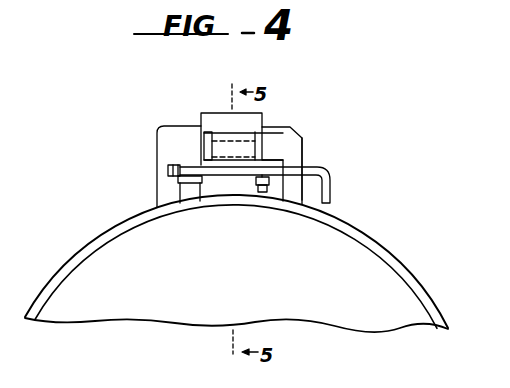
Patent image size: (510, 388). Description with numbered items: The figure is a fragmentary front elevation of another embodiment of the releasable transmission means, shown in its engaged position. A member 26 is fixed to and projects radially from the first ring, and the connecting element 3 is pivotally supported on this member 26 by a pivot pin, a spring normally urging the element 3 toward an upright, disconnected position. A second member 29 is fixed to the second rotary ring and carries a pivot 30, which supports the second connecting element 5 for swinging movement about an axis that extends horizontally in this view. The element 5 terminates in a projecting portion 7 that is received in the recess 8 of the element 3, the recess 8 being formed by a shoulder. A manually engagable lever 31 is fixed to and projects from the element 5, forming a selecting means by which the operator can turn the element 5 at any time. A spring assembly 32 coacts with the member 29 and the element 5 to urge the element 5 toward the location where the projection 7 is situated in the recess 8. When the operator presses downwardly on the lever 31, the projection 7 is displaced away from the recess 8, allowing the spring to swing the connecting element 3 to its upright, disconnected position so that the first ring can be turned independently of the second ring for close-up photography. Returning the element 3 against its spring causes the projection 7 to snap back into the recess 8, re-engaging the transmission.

The connecting element 3 is at (266, 118).
The second connecting element 5 is at (220, 148).
The projecting portion 7 is at (206, 136).
The recess 8 is at (228, 124).
The member 26 is at (302, 143).
The member 29 is at (192, 193).
The pivot 30 is at (180, 182).
The manually engagable lever 31 is at (331, 178).
The spring assembly 32 is at (262, 195).